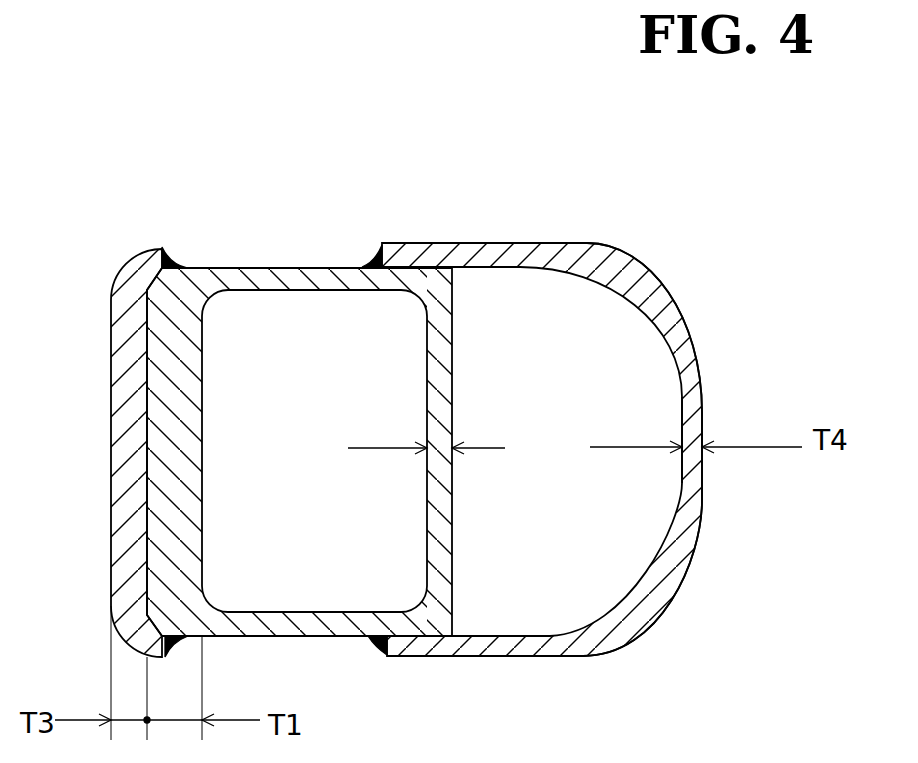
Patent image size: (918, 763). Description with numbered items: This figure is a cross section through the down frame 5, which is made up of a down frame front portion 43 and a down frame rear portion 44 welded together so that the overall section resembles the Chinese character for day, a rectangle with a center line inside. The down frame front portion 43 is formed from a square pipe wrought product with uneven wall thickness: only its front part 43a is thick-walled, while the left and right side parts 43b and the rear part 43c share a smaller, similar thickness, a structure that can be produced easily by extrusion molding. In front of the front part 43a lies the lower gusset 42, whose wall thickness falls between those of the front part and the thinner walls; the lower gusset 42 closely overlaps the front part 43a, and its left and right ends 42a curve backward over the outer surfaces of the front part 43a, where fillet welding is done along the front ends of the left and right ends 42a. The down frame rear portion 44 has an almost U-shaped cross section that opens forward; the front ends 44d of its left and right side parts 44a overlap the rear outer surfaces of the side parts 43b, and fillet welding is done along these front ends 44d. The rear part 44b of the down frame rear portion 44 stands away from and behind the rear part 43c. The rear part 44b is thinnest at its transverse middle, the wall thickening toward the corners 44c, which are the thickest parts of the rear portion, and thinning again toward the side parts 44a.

The down frame 5 is at (230, 242).
The lower gusset 42 is at (111, 440).
The left and right ends of the lower gusset 42a is at (158, 243).
The down frame front portion 43 is at (348, 403).
The front part 43a is at (193, 507).
The left and right side parts 43b is at (325, 289).
The rear part 43c is at (452, 350).
The down frame rear portion 44 is at (573, 431).
The left and right side parts 44a is at (482, 243).
The rear part 44b is at (698, 484).
The corners 44c is at (675, 293).
The front ends 44d is at (385, 243).